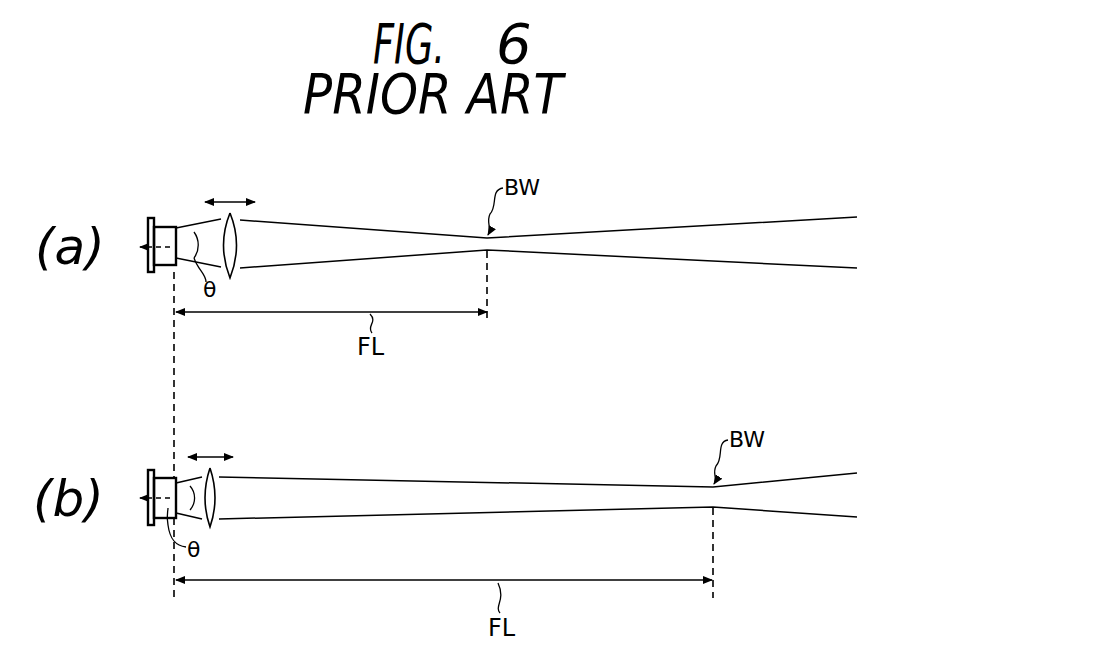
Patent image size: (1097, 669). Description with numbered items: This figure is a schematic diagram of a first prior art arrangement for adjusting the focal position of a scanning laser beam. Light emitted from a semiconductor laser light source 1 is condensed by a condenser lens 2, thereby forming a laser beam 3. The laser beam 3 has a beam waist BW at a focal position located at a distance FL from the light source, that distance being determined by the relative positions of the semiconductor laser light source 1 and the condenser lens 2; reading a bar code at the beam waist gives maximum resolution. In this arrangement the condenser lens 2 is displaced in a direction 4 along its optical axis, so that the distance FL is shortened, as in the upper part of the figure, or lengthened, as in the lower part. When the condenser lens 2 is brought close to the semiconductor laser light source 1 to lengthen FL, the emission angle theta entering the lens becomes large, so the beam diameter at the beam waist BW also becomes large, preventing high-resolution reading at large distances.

The semiconductor laser light source 1 is at (168, 230).
The condenser lens 2 is at (243, 248).
The laser beam 3 is at (361, 243).
The direction 4 is at (233, 200).